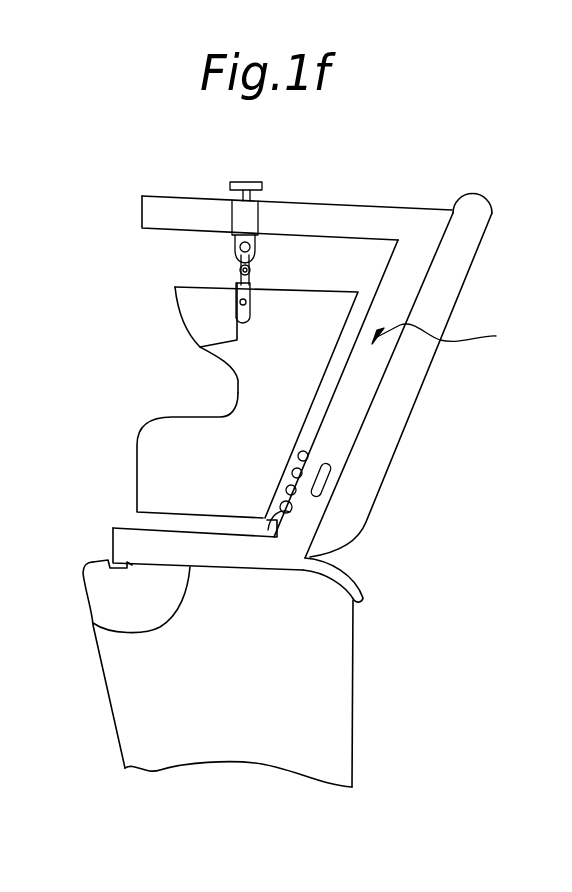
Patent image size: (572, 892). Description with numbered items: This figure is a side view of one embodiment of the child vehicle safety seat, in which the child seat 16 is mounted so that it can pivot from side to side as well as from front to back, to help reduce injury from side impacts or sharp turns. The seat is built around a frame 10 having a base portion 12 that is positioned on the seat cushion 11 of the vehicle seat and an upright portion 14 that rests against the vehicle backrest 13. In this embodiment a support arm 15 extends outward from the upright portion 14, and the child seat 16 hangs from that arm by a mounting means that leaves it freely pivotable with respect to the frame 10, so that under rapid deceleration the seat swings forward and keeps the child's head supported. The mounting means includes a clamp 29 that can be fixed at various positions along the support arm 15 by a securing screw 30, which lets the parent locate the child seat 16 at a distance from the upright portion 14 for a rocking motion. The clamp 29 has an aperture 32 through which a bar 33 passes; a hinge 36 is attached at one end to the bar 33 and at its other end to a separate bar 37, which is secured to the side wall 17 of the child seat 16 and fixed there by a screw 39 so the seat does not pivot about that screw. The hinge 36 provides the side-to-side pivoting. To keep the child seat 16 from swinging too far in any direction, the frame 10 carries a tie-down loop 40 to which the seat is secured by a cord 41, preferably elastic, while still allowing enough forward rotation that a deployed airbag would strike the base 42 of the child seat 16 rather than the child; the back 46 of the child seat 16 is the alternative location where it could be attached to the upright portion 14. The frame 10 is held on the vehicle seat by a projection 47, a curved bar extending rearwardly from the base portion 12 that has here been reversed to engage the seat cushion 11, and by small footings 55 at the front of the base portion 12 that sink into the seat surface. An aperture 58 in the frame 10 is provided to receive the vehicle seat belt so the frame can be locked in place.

The frame 10 is at (452, 328).
The seat cushion 11 is at (318, 643).
The base portion 12 is at (93, 623).
The backrest 13 is at (390, 432).
The upright portion 14 is at (521, 287).
The support arm 15 is at (324, 203).
The child seat 16 is at (192, 317).
The side wall 17 is at (282, 366).
The clamp 29 is at (237, 217).
The securing screw 30 is at (247, 181).
The aperture 32 is at (238, 251).
The bar 33 is at (249, 246).
The hinge 36 is at (256, 272).
The separate bar 37 is at (253, 297).
The screw 39 is at (201, 347).
The tie-down loop 40 is at (264, 540).
The cord 41 is at (302, 440).
The base 42 is at (165, 503).
The back 46 is at (330, 363).
The projection 47 is at (365, 583).
The footing 55 is at (111, 562).
The aperture 58 is at (318, 492).